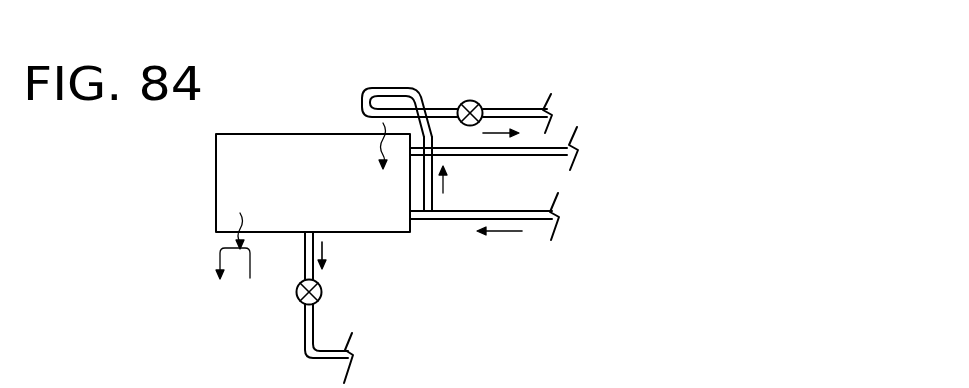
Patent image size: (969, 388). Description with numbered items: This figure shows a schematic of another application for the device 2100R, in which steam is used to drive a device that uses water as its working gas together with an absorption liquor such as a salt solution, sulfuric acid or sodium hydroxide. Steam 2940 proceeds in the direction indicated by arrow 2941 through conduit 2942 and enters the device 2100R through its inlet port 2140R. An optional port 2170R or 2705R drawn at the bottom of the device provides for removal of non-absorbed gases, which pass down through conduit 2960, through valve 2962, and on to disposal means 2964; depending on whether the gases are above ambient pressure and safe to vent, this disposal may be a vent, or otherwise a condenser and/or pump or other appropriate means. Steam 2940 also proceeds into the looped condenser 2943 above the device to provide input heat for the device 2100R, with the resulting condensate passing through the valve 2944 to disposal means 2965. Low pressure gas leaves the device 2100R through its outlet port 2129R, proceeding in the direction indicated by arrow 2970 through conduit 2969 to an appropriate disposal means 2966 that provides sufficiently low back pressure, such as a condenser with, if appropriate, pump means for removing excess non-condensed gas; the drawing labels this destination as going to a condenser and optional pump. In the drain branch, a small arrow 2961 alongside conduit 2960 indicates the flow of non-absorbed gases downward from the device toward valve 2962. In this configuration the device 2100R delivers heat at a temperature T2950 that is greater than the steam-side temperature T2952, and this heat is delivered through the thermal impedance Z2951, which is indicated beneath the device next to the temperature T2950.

The device 2100R is at (320, 186).
The outlet port 2129R is at (409, 149).
The inlet port 2140R is at (427, 220).
The optional port 2170R is at (303, 236).
The optional port 2705R is at (155, 360).
The temperature T2950 is at (200, 290).
The thermal impedance Z2951 is at (186, 312).
The steam 2940 is at (601, 225).
The arrow 2941 is at (502, 231).
The conduit 2942 is at (463, 210).
The condenser 2943 is at (420, 87).
The vent valve 2944 is at (472, 100).
The conduit 2960 is at (304, 234).
The drain flow arrow 2961 is at (347, 252).
The valve 2962 is at (322, 293).
The disposal means 2964 is at (387, 358).
The disposal means 2965 is at (547, 101).
The disposal means 2966 is at (699, 139).
The conduit 2969 is at (526, 147).
The arrow 2970 is at (493, 131).
The temperature T2952 is at (665, 220).